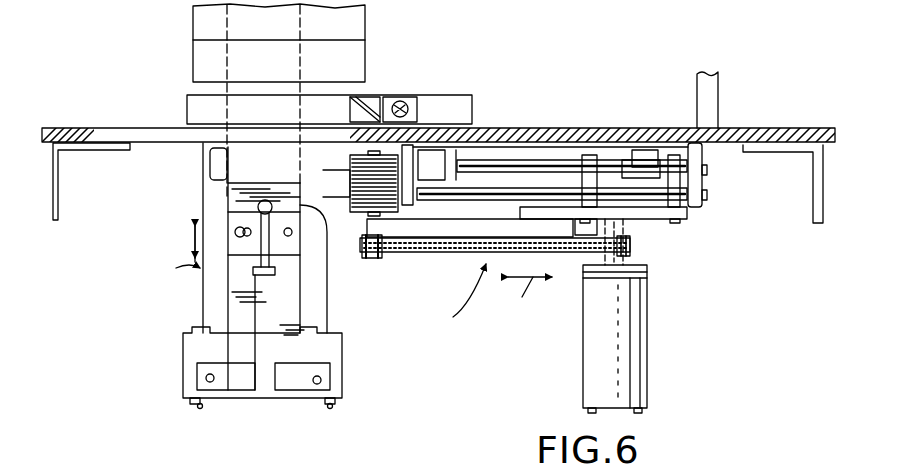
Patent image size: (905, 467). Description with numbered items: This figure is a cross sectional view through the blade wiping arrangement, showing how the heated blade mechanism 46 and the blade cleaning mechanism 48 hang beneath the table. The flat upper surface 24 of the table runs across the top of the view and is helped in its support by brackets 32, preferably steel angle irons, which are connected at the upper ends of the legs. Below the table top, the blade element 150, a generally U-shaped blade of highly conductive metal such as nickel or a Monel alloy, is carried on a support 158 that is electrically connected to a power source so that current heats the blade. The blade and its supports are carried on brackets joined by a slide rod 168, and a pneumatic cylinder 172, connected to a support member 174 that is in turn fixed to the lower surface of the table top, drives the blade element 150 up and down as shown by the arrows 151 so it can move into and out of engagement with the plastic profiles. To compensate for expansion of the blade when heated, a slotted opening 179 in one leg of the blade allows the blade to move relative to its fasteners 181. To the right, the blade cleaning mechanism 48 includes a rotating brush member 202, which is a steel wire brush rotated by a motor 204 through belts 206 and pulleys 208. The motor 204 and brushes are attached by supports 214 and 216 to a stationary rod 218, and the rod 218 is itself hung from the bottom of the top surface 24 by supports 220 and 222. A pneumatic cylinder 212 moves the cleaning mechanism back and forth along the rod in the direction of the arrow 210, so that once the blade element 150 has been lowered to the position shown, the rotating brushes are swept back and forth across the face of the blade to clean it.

The flat upper surface 24 is at (799, 131).
The brackets 32 is at (58, 190).
The heated blade mechanism 46 is at (165, 268).
The blade cleaning mechanism 48 is at (444, 305).
The blade element 150 is at (240, 193).
The arrows 151 is at (192, 233).
The support 158 is at (238, 283).
The slide rod 168 is at (260, 300).
The pneumatic cylinder 172 is at (208, 170).
The support member 174 is at (328, 353).
The slotted opening 179 is at (247, 215).
The fasteners 181 is at (243, 237).
The rotating brush member 202 is at (353, 193).
The motor 204 is at (648, 300).
The belts 206 is at (421, 253).
The pulleys 208 is at (363, 258).
The arrow 210 is at (523, 305).
The pneumatic cylinder 212 is at (313, 155).
The support 214 is at (590, 156).
The support 216 is at (683, 203).
The stationary rod 218 is at (477, 192).
The support 220 is at (427, 143).
The support 222 is at (717, 130).